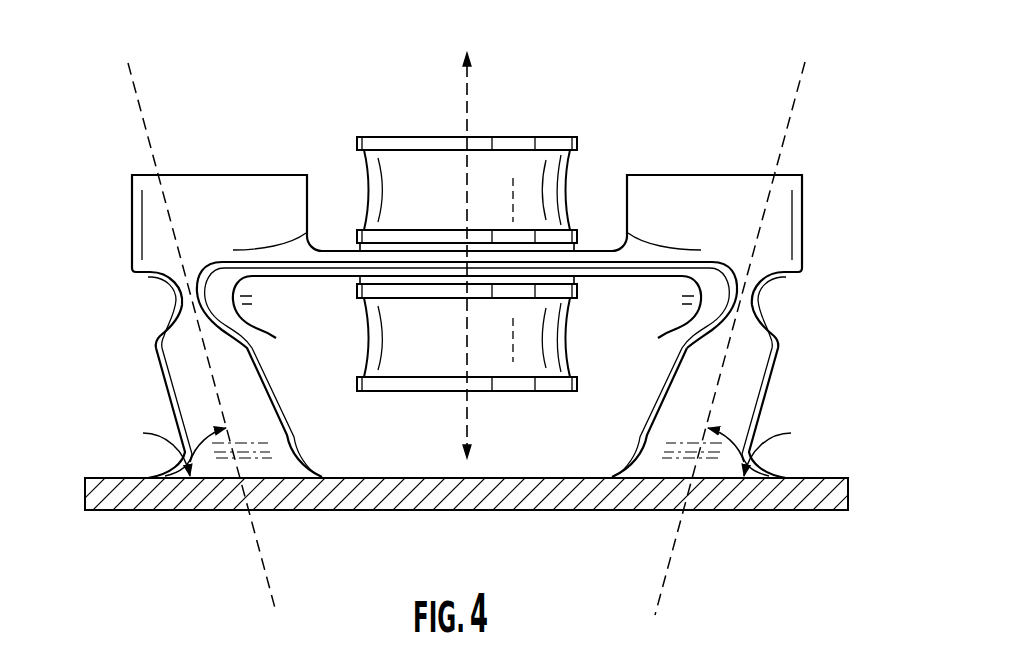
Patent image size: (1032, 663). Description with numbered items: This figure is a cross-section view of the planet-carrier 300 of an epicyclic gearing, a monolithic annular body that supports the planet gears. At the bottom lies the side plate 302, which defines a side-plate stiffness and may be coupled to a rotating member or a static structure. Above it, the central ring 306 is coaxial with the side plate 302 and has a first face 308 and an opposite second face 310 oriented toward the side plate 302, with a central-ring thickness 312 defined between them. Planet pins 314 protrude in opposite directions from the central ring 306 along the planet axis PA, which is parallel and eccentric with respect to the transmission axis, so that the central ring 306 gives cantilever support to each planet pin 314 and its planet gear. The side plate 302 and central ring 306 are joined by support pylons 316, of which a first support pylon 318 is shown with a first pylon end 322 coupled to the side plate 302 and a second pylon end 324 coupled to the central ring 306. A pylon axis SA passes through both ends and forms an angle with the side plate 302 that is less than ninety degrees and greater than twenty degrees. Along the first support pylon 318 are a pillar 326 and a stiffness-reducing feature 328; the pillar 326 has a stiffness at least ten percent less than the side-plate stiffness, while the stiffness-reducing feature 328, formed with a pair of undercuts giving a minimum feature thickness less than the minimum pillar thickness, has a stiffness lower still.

The planet-carrier 300 is at (720, 56).
The side plate 302 is at (823, 475).
The central ring 306 is at (810, 183).
The first face 308 is at (250, 146).
The second face 310 is at (277, 284).
The central-ring thickness 312 is at (330, 268).
The planet pins 314 is at (556, 137).
The support pylons 316 is at (213, 370).
The first support pylon 318 is at (710, 363).
The first pylon end 322 is at (307, 445).
The second pylon end 324 is at (151, 301).
The pillar 326 is at (617, 425).
The stiffness-reducing feature 328 is at (669, 304).
The pylon axis SA is at (140, 102).
The planet axis PA is at (470, 90).